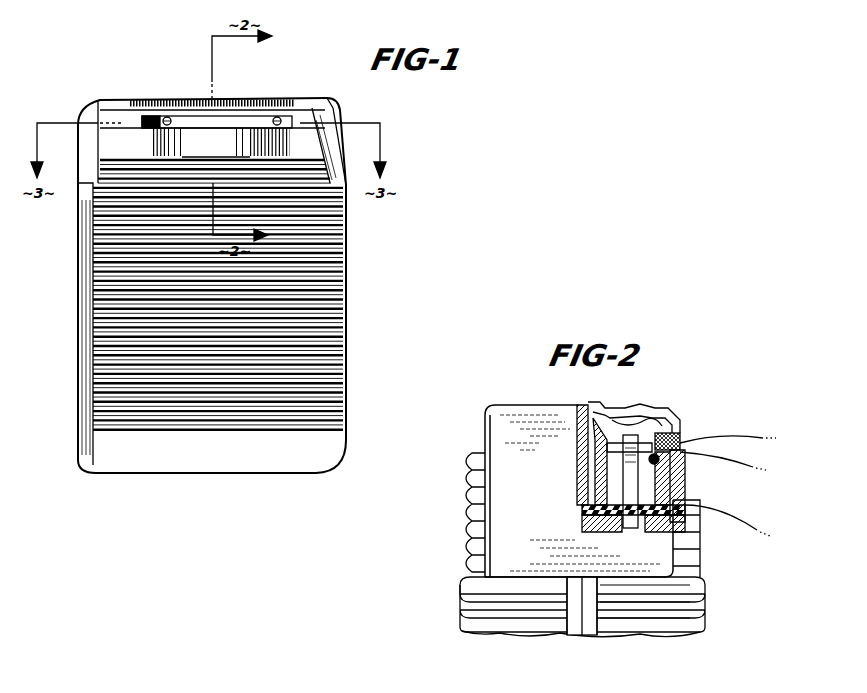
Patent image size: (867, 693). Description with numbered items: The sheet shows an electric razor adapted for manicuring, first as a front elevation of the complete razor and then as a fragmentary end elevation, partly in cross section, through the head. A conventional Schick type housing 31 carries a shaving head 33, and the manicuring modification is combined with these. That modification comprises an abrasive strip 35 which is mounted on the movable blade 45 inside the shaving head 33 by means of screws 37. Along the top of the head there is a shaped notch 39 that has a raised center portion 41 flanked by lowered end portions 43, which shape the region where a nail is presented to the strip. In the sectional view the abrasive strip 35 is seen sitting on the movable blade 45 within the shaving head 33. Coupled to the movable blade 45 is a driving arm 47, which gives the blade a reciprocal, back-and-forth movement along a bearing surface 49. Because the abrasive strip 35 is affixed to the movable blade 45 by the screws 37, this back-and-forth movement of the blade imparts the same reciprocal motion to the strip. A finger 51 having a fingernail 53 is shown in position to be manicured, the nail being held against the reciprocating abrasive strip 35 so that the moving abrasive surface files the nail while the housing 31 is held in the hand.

In FIG. 1, the housing 31 is at (345, 287).
In FIG. 2, the housing 31 is at (697, 597).
In FIG. 1, the shaving head 33 is at (282, 117).
In FIG. 2, the shaving head 33 is at (620, 392).
In FIG. 1, the abrasive strip 35 is at (193, 123).
In FIG. 2, the abrasive strip 35 is at (673, 437).
In FIG. 1, the screws 37 is at (180, 118).
In FIG. 1, the shaped notch 39 is at (235, 133).
In FIG. 1, the raised center portion 41 is at (215, 137).
In FIG. 1, the lowered end portions 43 is at (158, 132).
In FIG. 2, the movable blade 45 is at (650, 422).
In FIG. 2, the driving arm 47 is at (623, 483).
In FIG. 2, the bearing surface 49 is at (654, 462).
In FIG. 2, the finger 51 is at (738, 523).
In FIG. 2, the fingernail 53 is at (738, 440).